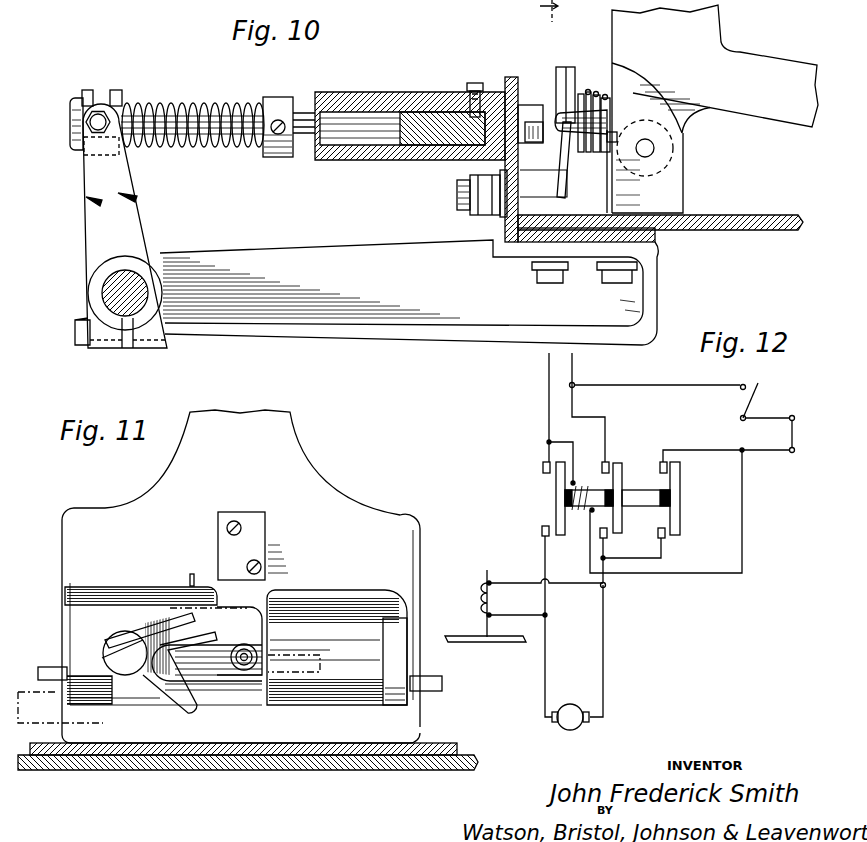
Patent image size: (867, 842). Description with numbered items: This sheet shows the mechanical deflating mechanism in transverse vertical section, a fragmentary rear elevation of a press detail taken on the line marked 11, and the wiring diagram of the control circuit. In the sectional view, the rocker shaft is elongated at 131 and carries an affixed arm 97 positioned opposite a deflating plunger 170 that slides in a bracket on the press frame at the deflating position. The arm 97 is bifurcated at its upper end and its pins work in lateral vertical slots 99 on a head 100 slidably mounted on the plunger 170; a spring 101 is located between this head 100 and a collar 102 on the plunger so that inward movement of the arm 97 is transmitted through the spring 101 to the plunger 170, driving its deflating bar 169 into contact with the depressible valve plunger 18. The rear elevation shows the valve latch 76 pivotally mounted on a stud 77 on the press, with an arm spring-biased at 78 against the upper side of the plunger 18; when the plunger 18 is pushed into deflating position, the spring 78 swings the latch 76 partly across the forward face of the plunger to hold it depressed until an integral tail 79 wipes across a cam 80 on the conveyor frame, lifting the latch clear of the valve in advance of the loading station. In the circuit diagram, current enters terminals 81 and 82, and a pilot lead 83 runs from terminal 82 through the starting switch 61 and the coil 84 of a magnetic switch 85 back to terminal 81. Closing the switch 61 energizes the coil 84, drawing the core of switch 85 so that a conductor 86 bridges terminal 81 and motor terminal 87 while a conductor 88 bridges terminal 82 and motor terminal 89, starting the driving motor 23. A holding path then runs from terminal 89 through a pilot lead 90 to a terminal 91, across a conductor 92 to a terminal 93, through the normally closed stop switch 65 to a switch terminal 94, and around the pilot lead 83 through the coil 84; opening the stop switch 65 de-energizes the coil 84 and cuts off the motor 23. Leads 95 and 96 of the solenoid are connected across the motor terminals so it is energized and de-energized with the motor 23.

In FIG. 10, the rear elevation view 11 is at (563, 11).
In FIG. 10, the depressible plunger 18 is at (551, 115).
In FIG. 11, the depressible plunger 18 is at (253, 664).
In FIG. 12, the driving motor 23 is at (576, 730).
In FIG. 12, the motor-starting switch 61 is at (757, 392).
In FIG. 12, the motor stopping switch 65 is at (793, 432).
In FIG. 10, the valve latch 76 is at (558, 68).
In FIG. 11, the valve latch 76 is at (175, 625).
In FIG. 10, the stud 77 is at (571, 183).
In FIG. 11, the stud 77 is at (120, 636).
In FIG. 10, the spring 78 is at (582, 97).
In FIG. 11, the spring 78 is at (140, 636).
In FIG. 11, the tail 79 is at (188, 713).
In FIG. 10, the cam 80 is at (507, 219).
In FIG. 11, the cam 80 is at (50, 697).
In FIG. 12, the terminal 81 is at (541, 465).
In FIG. 12, the terminal 82 is at (608, 463).
In FIG. 12, the pilot lead 83 is at (660, 378).
In FIG. 12, the coil 84 is at (578, 510).
In FIG. 12, the magnetic switch 85 is at (639, 497).
In FIG. 12, the conductor 86 is at (555, 482).
In FIG. 12, the motor terminal 87 is at (541, 530).
In FIG. 12, the conductor 88 is at (620, 522).
In FIG. 12, the motor terminal 89 is at (603, 540).
In FIG. 12, the pilot lead 90 is at (668, 557).
In FIG. 12, the terminal 91 is at (667, 540).
In FIG. 12, the conductor 92 is at (679, 489).
In FIG. 12, the terminal 93 is at (669, 466).
In FIG. 12, the switch terminal 94 is at (740, 417).
In FIG. 12, the lead 95 is at (518, 583).
In FIG. 12, the lead 96 is at (530, 608).
In FIG. 10, the arm 97 is at (118, 203).
In FIG. 10, the lateral vertical slots 99 is at (89, 90).
In FIG. 10, the head 100 is at (118, 92).
In FIG. 10, the spring 101 is at (200, 101).
In FIG. 10, the collar 102 is at (280, 100).
In FIG. 10, the elongated shaft 131 is at (135, 279).
In FIG. 10, the deflating bar 169 is at (483, 164).
In FIG. 10, the deflating plunger 170 is at (368, 120).